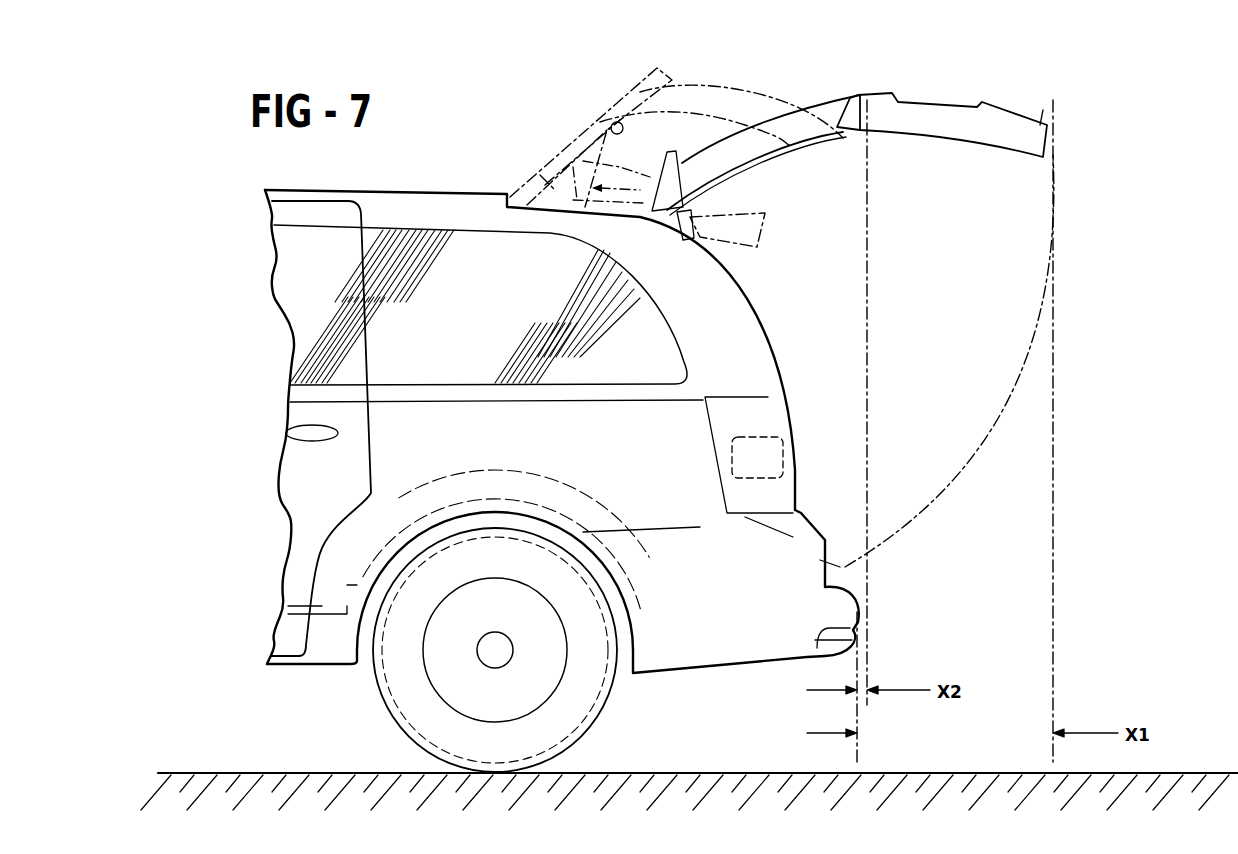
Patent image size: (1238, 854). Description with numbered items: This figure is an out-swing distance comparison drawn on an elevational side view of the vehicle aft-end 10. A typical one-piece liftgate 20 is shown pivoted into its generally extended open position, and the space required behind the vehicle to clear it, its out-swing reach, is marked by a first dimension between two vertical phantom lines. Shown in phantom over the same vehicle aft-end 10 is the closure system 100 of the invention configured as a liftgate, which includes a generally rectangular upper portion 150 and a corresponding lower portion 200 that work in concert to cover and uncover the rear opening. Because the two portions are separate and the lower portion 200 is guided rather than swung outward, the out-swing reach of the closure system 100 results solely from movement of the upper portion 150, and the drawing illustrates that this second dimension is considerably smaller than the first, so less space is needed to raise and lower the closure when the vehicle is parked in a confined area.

The vehicle aft-end 10 is at (315, 684).
The one-piece liftgate 20 is at (940, 102).
The closure system 100 is at (747, 93).
The upper portion 150 is at (615, 97).
The lower portion 200 is at (737, 197).